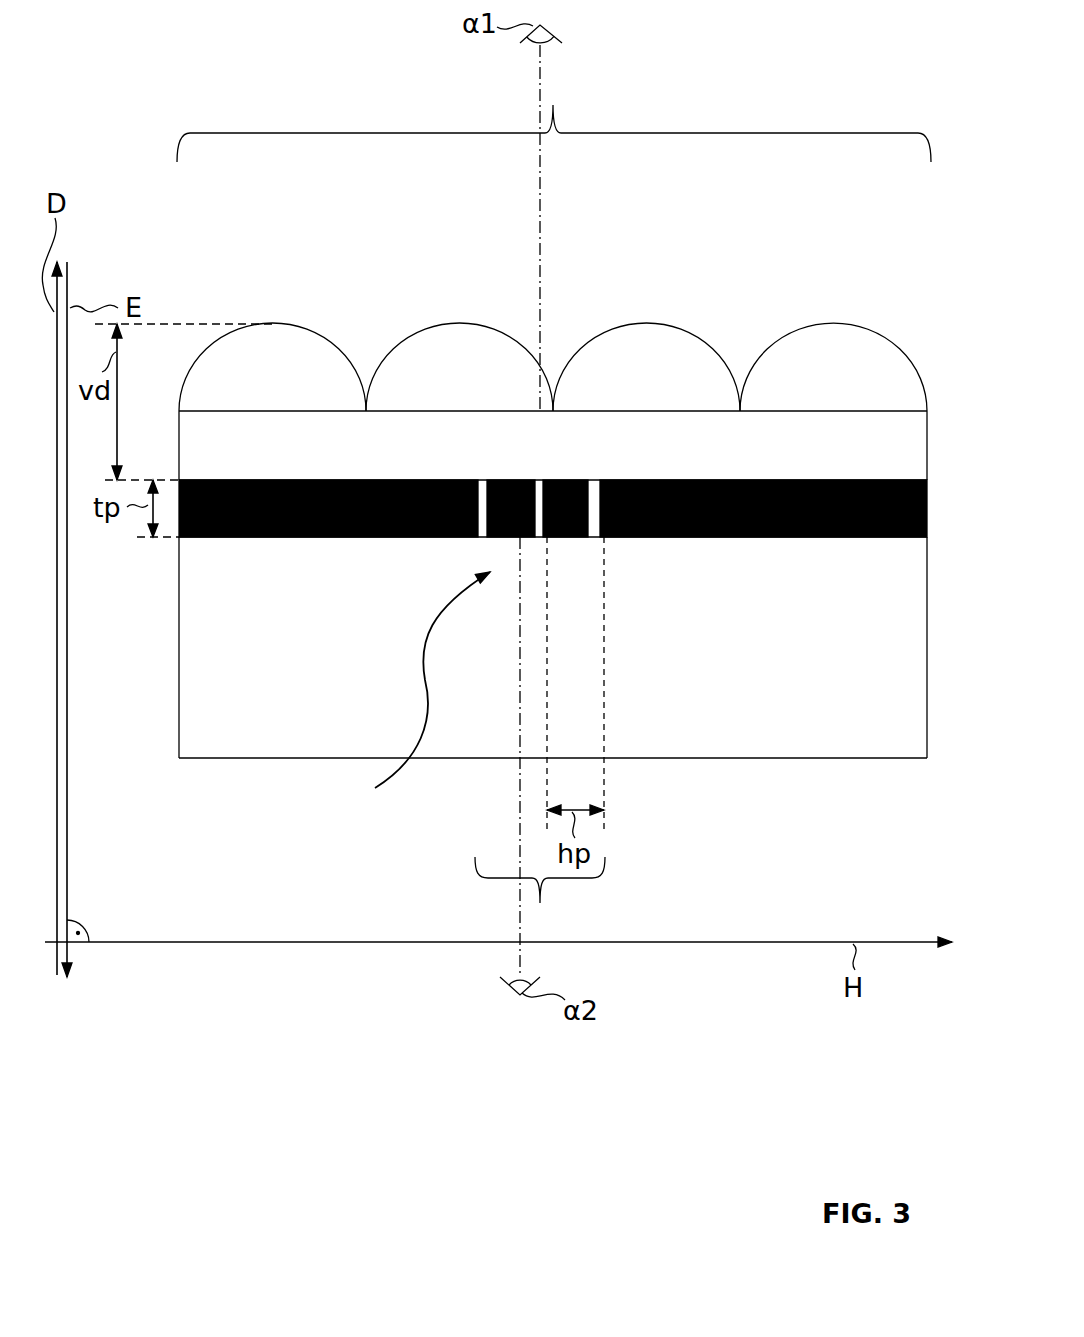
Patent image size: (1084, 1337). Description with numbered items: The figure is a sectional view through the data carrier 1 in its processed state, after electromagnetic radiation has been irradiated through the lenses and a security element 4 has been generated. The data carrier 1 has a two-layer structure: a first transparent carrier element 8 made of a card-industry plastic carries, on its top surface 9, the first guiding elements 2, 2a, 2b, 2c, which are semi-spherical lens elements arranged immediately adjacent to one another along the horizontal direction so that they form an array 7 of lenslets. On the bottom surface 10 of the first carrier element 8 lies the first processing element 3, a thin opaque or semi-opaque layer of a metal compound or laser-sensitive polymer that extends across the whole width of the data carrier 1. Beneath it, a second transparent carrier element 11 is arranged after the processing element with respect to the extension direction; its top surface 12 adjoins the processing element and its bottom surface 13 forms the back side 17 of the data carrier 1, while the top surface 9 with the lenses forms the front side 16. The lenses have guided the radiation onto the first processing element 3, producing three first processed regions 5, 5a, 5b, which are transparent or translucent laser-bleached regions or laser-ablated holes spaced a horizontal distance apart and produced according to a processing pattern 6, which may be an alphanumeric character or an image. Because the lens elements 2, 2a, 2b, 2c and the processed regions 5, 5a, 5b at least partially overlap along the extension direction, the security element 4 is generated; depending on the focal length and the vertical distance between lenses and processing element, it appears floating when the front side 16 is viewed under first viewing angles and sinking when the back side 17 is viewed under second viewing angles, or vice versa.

The data carrier 1 is at (168, 103).
The first guiding element 2 is at (312, 330).
The first guiding element 2a is at (410, 334).
The first guiding element 2b is at (583, 345).
The first guiding element 2c is at (778, 340).
The first processing element 3 is at (928, 488).
The security element 4 is at (425, 699).
The first processed region 5 is at (482, 478).
The first processed region 5a is at (540, 478).
The first processed region 5b is at (595, 478).
The processing pattern 6 is at (540, 898).
The array of lenslets 7 is at (554, 114).
The first transparent carrier element 8 is at (905, 434).
The top surface 9 is at (898, 410).
The bottom surface 10 is at (897, 480).
The second transparent carrier element 11 is at (907, 606).
The top surface 12 is at (900, 538).
The bottom surface 13 is at (872, 760).
The front side 16 is at (860, 410).
The back side 17 is at (248, 762).